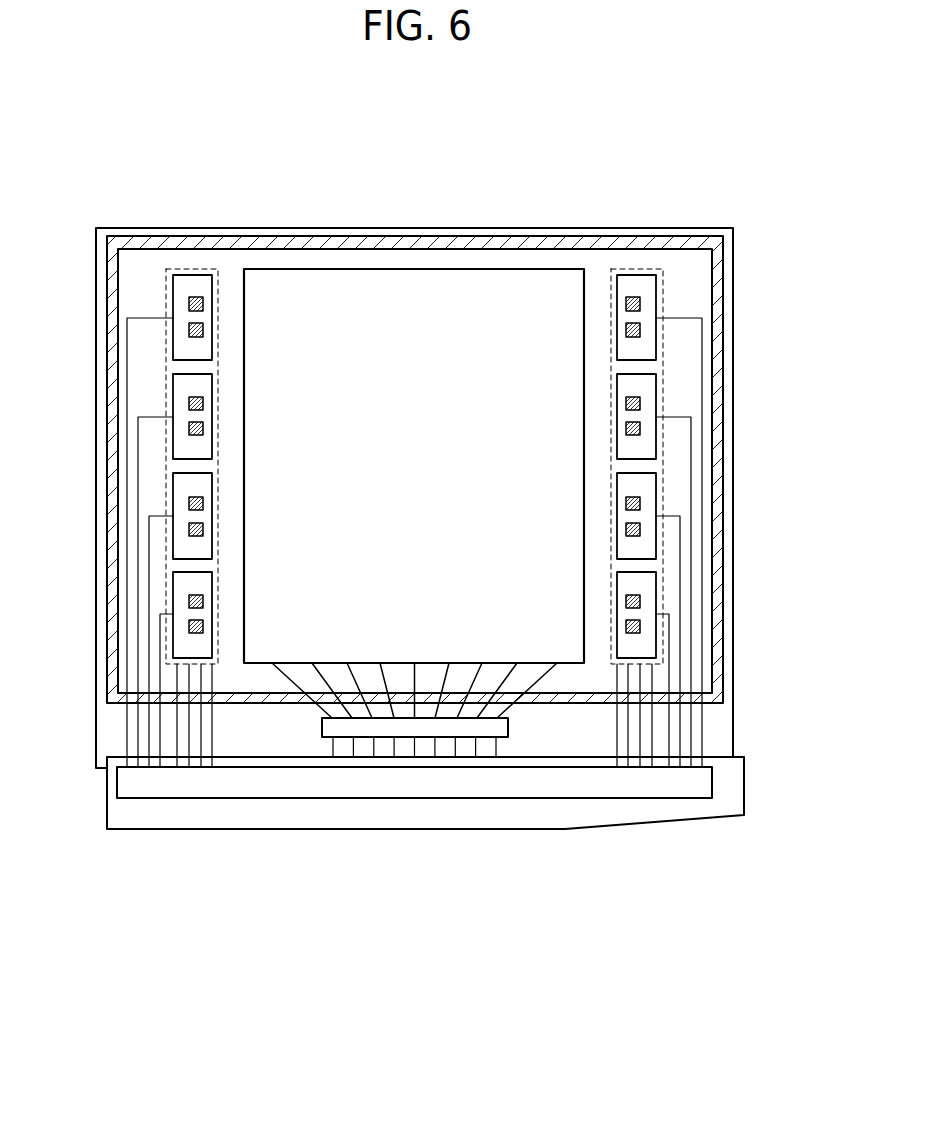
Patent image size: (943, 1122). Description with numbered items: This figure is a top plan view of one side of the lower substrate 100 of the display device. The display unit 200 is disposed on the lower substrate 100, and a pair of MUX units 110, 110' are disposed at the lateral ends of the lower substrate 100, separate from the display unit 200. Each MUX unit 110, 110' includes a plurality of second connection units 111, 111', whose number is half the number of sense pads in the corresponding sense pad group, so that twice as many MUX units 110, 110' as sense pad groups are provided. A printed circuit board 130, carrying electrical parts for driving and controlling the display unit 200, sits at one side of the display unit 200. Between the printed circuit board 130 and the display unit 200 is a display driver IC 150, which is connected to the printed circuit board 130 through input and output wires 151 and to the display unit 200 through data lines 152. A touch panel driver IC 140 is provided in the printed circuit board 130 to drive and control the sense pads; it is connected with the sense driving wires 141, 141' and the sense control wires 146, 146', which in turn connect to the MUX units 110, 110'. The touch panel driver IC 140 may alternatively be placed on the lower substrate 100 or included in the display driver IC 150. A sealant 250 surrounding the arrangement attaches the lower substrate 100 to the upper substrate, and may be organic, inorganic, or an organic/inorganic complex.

The lower substrate 100 is at (733, 353).
The sealant 250 is at (715, 292).
The display unit 200 is at (413, 268).
The MUX unit 110 is at (167, 409).
The second connection unit 111 is at (198, 394).
The MUX unit 110' is at (666, 409).
The second connection unit 111' is at (639, 394).
The sense driving wire 141 is at (100, 542).
The sense driving wire 141' is at (734, 542).
The sense control wire 146 is at (217, 779).
The sense control wire 146' is at (616, 778).
The data line 152 is at (284, 675).
The display driver IC 150 is at (510, 730).
The input and output wire 151 is at (330, 747).
The printed circuit board 130 is at (385, 810).
The touch panel driver IC 140 is at (168, 798).